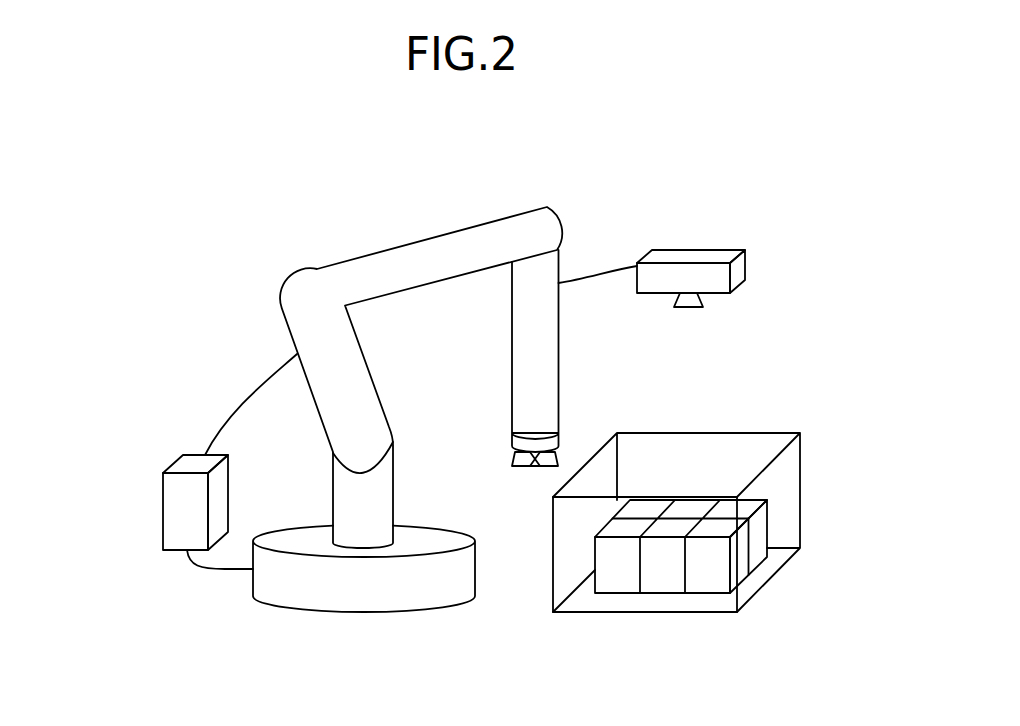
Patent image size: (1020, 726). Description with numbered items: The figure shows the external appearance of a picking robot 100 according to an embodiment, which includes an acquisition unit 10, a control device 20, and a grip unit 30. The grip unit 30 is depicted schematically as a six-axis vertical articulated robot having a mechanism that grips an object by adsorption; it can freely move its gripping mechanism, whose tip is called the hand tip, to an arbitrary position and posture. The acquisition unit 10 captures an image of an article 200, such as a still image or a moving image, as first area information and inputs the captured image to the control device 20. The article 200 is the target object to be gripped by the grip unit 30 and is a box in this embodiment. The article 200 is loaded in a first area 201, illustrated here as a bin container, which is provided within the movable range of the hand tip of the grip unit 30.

The picking robot 100 is at (513, 175).
The grip unit 30 is at (425, 238).
The acquisition unit 10 is at (708, 250).
The control device 20 is at (163, 513).
The first area 201 is at (709, 433).
The article 200 is at (770, 531).